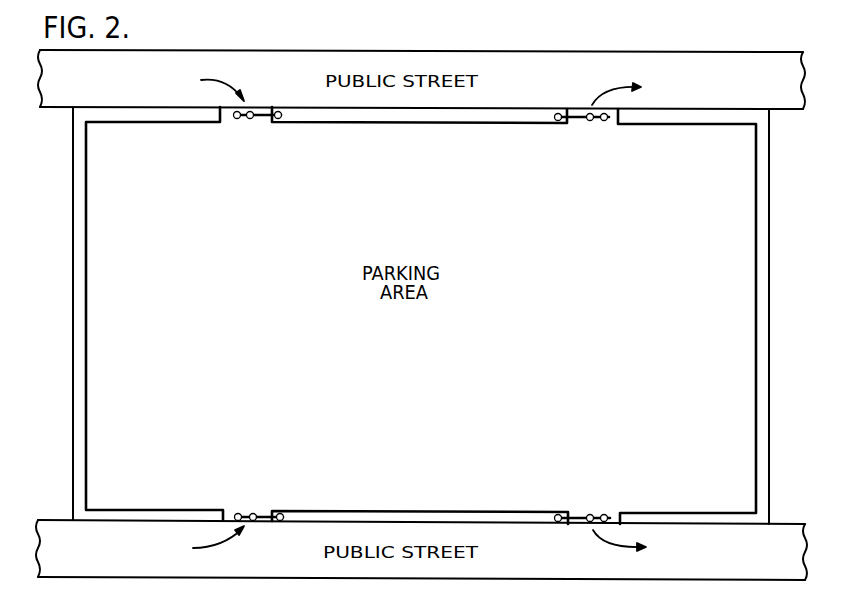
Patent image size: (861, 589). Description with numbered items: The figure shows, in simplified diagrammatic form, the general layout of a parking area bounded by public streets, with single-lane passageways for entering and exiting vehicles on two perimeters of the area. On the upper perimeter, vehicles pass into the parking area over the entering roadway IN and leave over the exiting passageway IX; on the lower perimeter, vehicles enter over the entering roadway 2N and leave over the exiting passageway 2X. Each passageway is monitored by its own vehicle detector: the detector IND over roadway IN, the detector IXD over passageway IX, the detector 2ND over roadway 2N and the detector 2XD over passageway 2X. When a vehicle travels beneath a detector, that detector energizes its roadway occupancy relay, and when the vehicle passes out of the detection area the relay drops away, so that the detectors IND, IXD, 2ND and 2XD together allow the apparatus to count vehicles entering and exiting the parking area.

The entering roadway IN is at (259, 130).
The vehicle detector IND is at (234, 118).
The exiting passageway IX is at (582, 133).
The vehicle detector IXD is at (606, 122).
The entering roadway 2N is at (258, 503).
The vehicle detector 2ND is at (255, 514).
The exiting passageway 2X is at (583, 504).
The vehicle detector 2XD is at (606, 515).